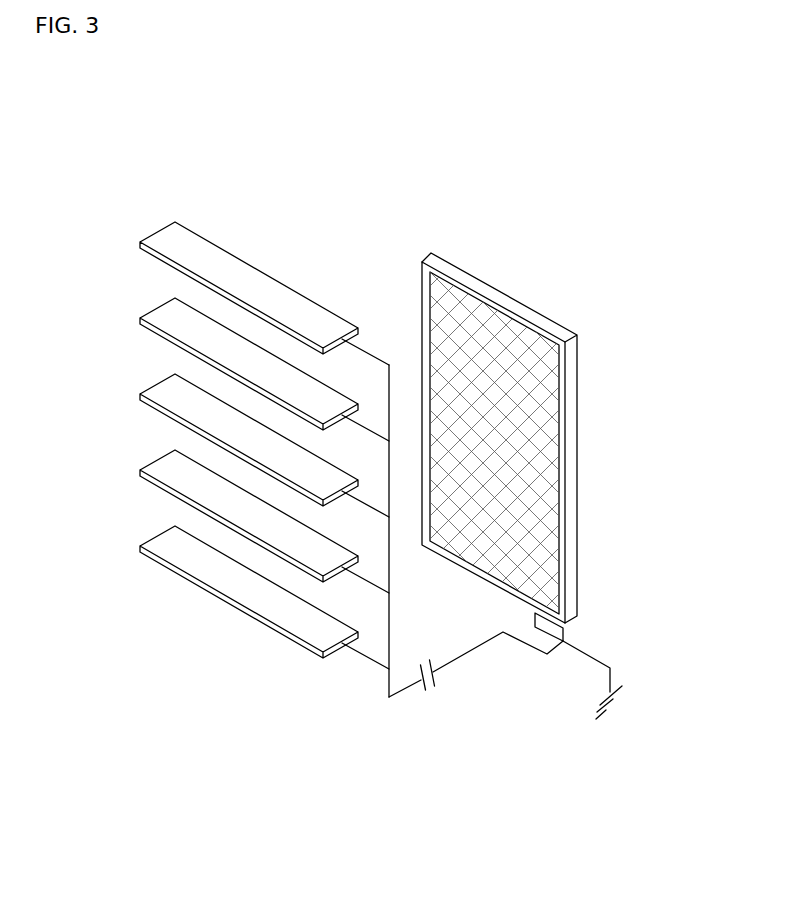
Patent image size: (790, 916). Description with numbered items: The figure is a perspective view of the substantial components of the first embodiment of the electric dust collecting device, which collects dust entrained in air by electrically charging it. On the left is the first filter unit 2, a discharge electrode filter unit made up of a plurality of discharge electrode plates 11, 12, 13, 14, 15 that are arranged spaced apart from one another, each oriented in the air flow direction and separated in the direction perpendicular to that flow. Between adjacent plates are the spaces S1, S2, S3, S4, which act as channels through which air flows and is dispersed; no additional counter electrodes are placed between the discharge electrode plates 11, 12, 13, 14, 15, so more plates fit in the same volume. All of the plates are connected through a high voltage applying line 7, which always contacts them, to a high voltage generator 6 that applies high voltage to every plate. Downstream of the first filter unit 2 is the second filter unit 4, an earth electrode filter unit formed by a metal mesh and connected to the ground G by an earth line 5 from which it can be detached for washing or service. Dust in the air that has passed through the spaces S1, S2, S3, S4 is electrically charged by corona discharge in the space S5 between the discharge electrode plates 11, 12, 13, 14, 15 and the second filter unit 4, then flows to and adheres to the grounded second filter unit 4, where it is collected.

The first filter unit 2 is at (229, 383).
The second filter unit 4 is at (407, 271).
The earth line 5 is at (566, 629).
The high voltage generator 6 is at (435, 688).
The high voltage applying line 7 is at (410, 504).
The discharge electrode plate 11 is at (142, 246).
The discharge electrode plate 12 is at (142, 322).
The discharge electrode plate 13 is at (142, 398).
The discharge electrode plate 14 is at (142, 474).
The discharge electrode plate 15 is at (142, 550).
The space S1 is at (261, 335).
The space S2 is at (261, 411).
The space S3 is at (261, 487).
The space S4 is at (261, 563).
The space S5 is at (409, 335).
The ground G is at (624, 694).